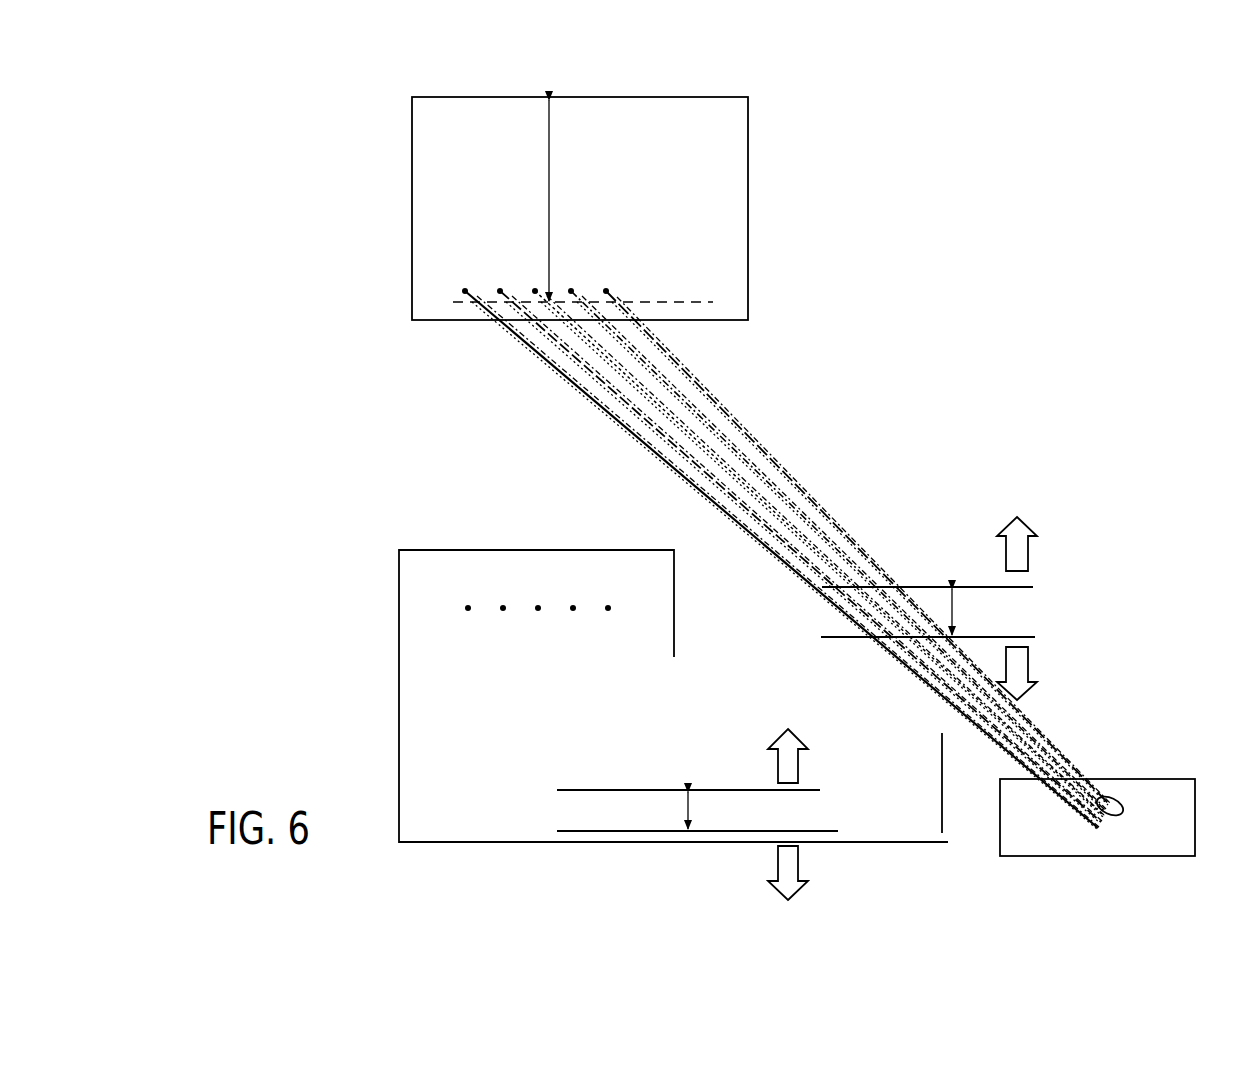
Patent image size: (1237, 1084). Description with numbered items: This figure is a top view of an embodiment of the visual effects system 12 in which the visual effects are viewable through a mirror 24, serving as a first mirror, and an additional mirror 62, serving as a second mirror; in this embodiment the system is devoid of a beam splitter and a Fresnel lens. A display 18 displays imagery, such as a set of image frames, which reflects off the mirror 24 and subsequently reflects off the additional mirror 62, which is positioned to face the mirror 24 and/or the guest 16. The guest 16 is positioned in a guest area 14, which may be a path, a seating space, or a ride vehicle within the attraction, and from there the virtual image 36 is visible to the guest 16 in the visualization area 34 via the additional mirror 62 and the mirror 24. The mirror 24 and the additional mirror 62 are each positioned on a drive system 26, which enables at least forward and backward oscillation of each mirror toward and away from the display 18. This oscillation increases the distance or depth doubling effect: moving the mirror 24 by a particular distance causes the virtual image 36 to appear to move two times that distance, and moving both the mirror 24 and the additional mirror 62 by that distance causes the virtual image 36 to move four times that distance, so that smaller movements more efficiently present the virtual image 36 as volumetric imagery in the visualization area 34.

The visual effects system 12 is at (1095, 516).
The guest area 14 is at (1000, 815).
The guest 16 is at (1118, 800).
The display 18 is at (538, 613).
The mirror 24 is at (570, 812).
The drive system 26 is at (575, 780).
The visualization area 34 is at (412, 207).
The virtual image 36 is at (543, 298).
The additional mirror 62 is at (832, 615).